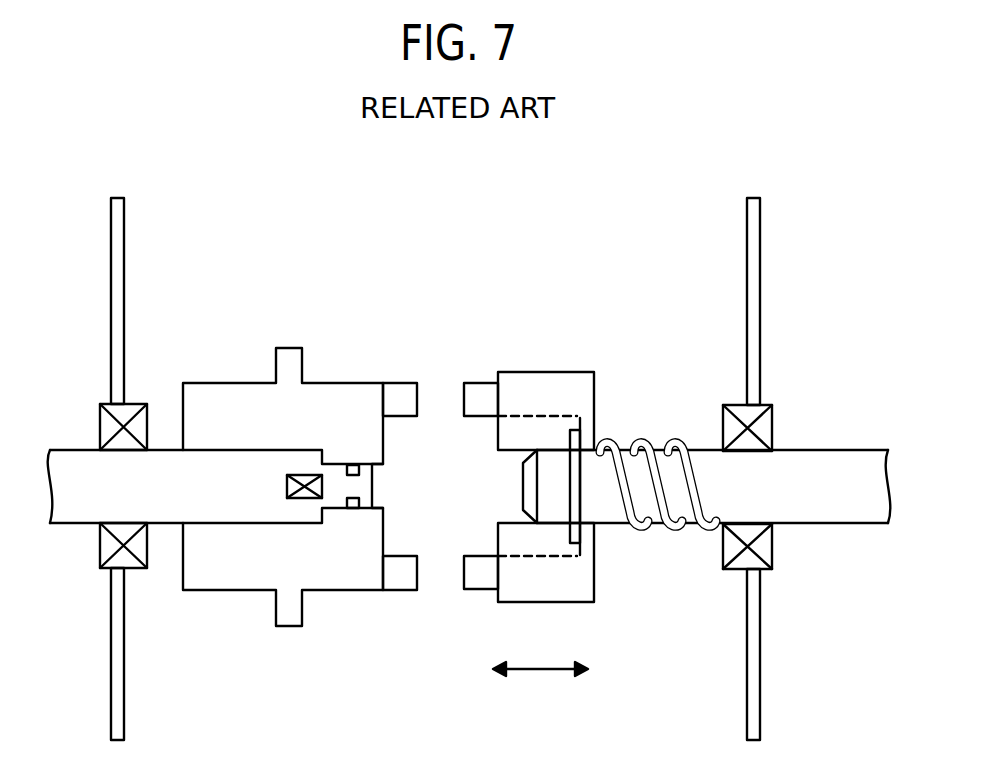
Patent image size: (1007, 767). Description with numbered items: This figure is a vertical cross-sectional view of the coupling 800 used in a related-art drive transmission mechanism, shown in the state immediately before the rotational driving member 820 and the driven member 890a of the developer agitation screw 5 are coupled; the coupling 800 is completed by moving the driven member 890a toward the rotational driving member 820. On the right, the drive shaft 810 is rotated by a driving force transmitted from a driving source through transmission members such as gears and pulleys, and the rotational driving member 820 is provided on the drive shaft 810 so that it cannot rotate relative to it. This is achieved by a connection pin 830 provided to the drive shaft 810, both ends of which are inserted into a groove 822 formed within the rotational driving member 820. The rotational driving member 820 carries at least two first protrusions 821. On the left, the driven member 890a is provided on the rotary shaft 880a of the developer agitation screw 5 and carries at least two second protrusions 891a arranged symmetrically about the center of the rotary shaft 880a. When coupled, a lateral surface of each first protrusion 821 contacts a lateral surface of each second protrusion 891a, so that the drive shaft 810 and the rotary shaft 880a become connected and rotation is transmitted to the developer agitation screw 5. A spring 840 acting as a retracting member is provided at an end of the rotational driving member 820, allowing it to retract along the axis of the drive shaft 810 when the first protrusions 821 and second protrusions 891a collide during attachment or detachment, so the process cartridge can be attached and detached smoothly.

The developer agitation screw 5 is at (78, 430).
The coupling 800 is at (395, 679).
The drive shaft 810 is at (822, 512).
The rotational driving member 820 is at (568, 378).
The first protrusions 821 is at (482, 388).
The groove 822 is at (515, 528).
The connection pin 830 is at (583, 505).
The spring 840 is at (660, 438).
The rotary shaft 880a is at (77, 512).
The driven member 890a is at (228, 388).
The second protrusions 891a is at (398, 390).